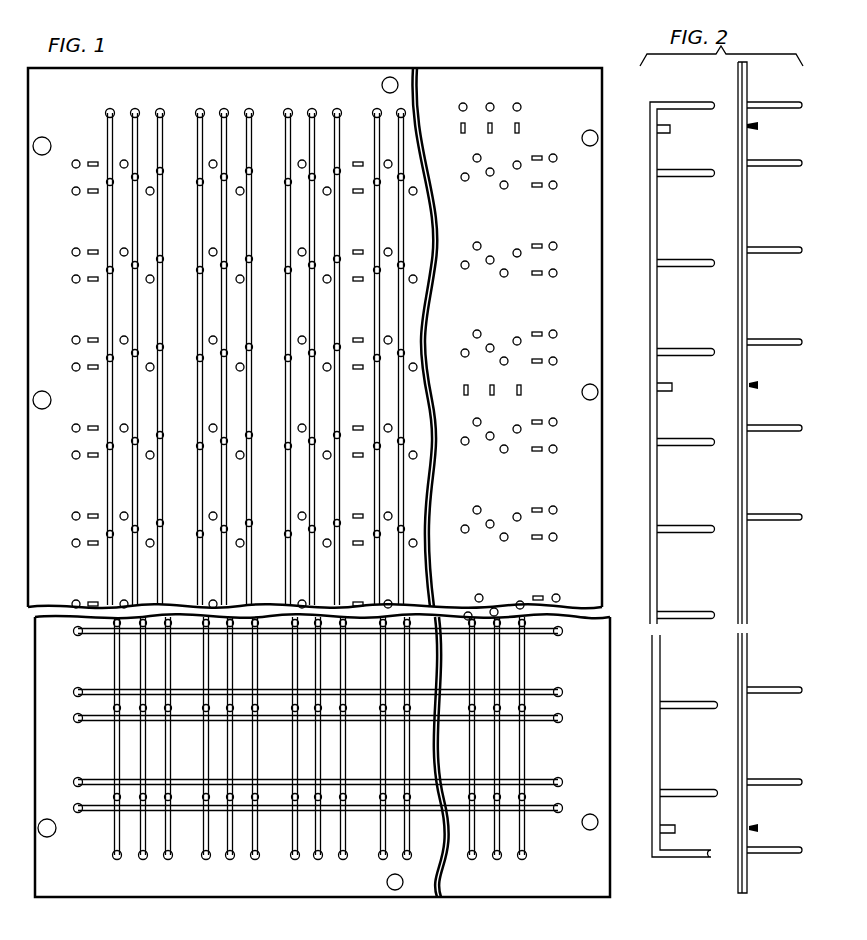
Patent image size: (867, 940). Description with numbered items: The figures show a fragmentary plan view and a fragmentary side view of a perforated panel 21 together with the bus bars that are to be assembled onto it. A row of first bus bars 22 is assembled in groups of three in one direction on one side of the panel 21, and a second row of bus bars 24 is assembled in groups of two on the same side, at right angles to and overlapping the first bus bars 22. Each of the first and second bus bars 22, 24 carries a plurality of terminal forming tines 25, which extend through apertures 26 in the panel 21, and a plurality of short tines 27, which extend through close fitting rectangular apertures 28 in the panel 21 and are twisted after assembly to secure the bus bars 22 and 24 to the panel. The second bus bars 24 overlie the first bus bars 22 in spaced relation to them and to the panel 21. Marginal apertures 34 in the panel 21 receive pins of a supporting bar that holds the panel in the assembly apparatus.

In FIG. 1, the perforated panel 21 is at (452, 82).
In FIG. 2, the perforated panel 21 is at (747, 84).
In FIG. 1, the first bus bars 22 is at (255, 116).
In FIG. 2, the first bus bars 22 is at (736, 108).
In FIG. 1, the second bus bars 24 is at (568, 718).
In FIG. 2, the terminal forming tines 25 is at (700, 705).
In FIG. 1, the apertures 26 is at (520, 107).
In FIG. 2, the short tines 27 is at (672, 388).
In FIG. 1, the rectangular apertures 28 is at (518, 130).
In FIG. 1, the marginal apertures 34 is at (46, 138).